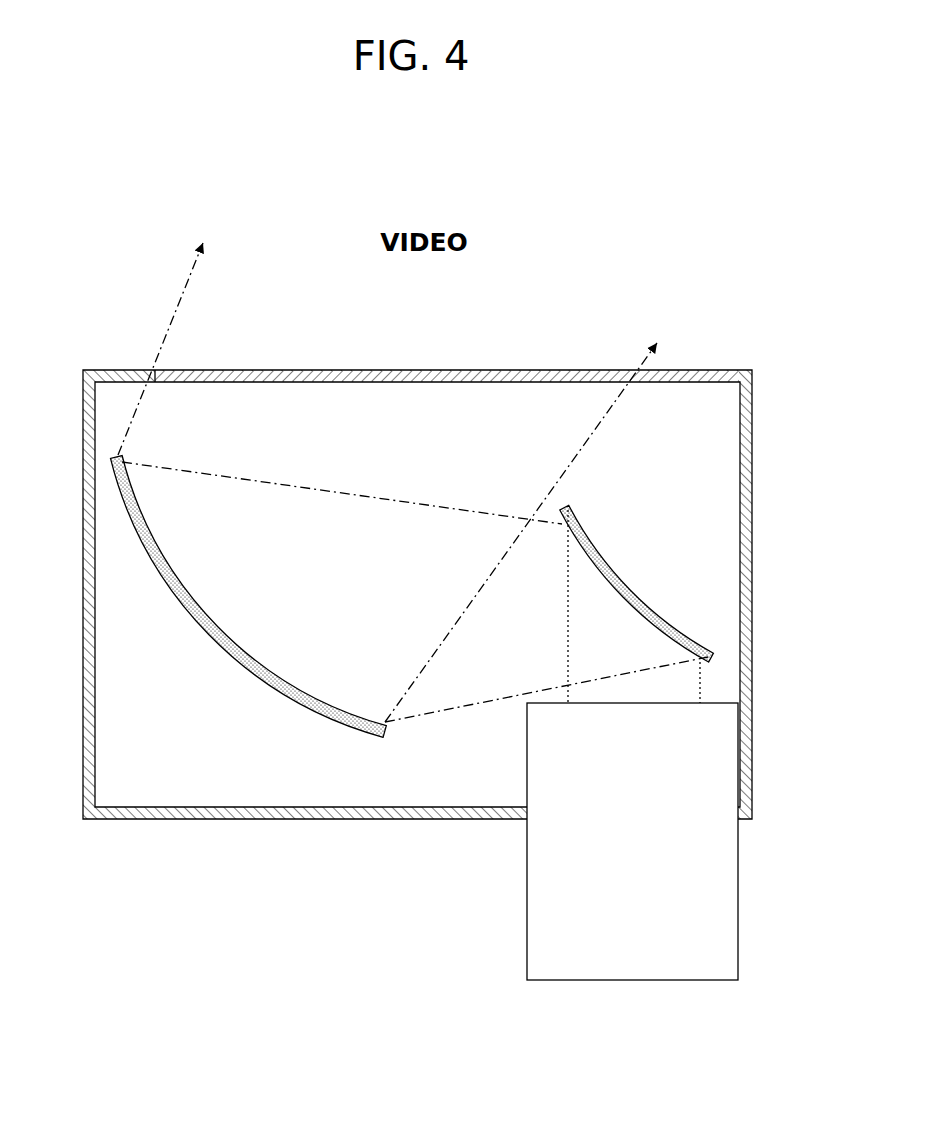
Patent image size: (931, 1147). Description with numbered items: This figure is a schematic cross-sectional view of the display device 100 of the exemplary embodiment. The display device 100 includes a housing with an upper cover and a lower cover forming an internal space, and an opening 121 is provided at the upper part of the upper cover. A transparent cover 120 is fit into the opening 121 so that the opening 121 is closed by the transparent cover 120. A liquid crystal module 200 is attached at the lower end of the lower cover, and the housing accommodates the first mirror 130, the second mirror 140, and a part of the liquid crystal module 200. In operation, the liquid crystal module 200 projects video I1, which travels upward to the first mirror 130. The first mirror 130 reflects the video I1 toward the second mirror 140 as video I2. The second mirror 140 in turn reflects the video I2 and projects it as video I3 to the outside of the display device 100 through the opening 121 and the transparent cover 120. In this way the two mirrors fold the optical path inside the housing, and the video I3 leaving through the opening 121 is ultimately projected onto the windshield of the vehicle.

The display device 100 is at (444, 591).
The transparent cover 120 is at (418, 372).
The opening 121 is at (155, 370).
The first mirror 130 is at (630, 588).
The second mirror 140 is at (210, 643).
The liquid crystal module 200 is at (722, 895).
The video I1 is at (700, 703).
The video I2 is at (472, 705).
The video I3 is at (187, 278).